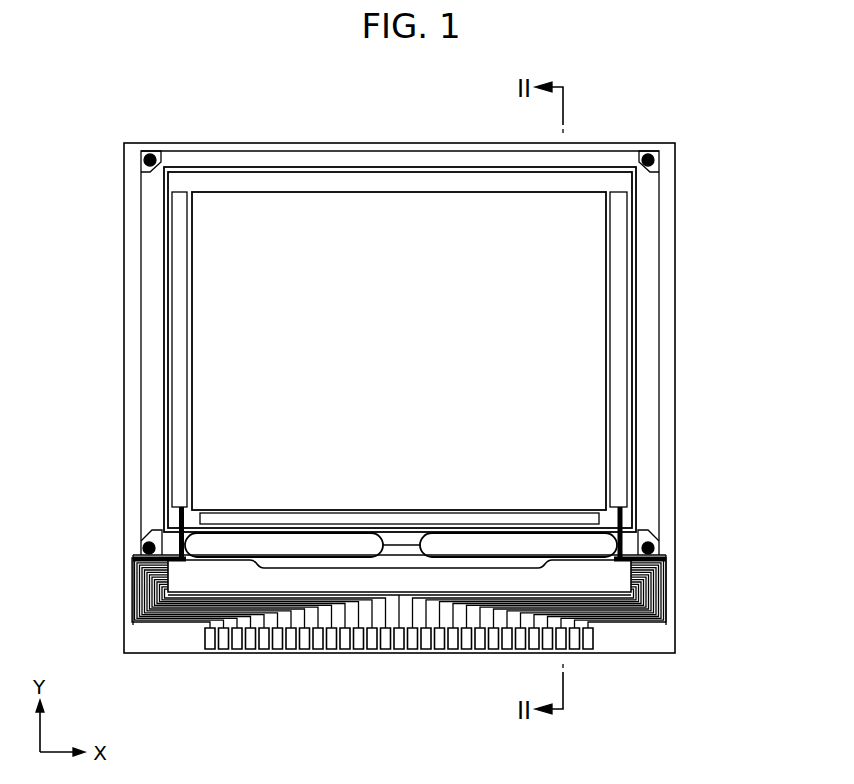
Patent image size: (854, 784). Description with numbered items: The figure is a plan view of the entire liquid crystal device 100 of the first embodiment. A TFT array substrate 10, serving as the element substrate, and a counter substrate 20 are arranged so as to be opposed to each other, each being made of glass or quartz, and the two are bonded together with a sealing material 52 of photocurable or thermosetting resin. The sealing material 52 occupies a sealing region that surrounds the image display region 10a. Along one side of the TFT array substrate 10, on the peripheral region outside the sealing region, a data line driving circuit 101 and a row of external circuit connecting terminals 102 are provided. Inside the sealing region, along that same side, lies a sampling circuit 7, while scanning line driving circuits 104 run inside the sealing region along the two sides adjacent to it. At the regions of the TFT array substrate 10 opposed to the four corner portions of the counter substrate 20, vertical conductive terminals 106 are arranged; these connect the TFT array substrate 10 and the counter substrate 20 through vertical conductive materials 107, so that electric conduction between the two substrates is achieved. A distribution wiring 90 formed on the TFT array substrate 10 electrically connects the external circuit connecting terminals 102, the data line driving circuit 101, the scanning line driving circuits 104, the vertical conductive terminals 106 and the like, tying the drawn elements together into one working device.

The liquid crystal device 100 is at (640, 58).
The TFT array substrate 10 is at (239, 147).
The counter substrate 20 is at (423, 164).
The image display region 10a is at (233, 310).
The sealing material 52 is at (652, 292).
The scanning line driving circuits 104 is at (622, 356).
The sampling circuit 7 is at (410, 516).
The vertical conductive terminals 106 is at (166, 160).
The vertical conductive materials 107 is at (142, 542).
The distribution wiring 90 is at (133, 595).
The data line driving circuit 101 is at (192, 583).
The external circuit connecting terminals 102 is at (367, 636).